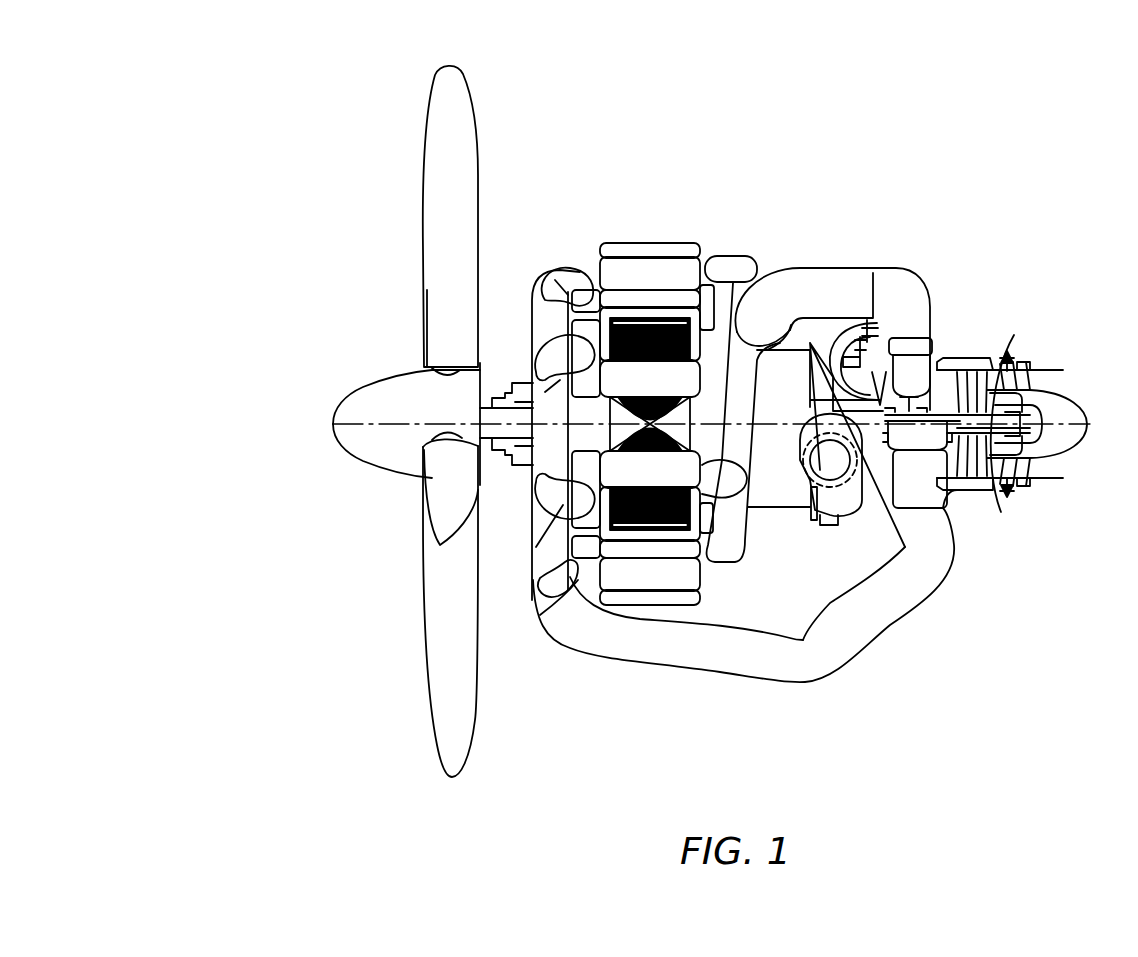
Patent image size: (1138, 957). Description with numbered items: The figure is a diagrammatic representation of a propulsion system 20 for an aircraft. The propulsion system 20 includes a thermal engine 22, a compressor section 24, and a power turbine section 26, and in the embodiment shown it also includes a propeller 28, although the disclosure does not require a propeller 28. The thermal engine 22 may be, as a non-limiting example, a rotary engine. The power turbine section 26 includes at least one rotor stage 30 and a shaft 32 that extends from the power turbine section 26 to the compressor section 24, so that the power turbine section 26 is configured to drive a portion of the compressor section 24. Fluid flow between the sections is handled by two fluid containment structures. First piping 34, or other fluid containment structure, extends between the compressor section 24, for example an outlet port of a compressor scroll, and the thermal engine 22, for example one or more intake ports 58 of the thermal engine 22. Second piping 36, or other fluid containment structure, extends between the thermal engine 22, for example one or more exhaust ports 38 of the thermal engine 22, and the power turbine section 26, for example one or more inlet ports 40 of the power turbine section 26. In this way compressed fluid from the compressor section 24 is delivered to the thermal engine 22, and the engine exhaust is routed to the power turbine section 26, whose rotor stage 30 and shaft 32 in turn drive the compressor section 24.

The propulsion system 20 is at (1058, 107).
The thermal engine 22 is at (652, 230).
The compressor section 24 is at (846, 246).
The power turbine section 26 is at (980, 334).
The propeller 28 is at (374, 332).
The rotor stage 30 is at (1005, 352).
The shaft 32 is at (998, 495).
The first piping 34 is at (836, 675).
The second piping 36 is at (805, 266).
The exhaust port 38 is at (700, 562).
The inlet port 40 is at (933, 338).
The intake port 58 is at (548, 542).